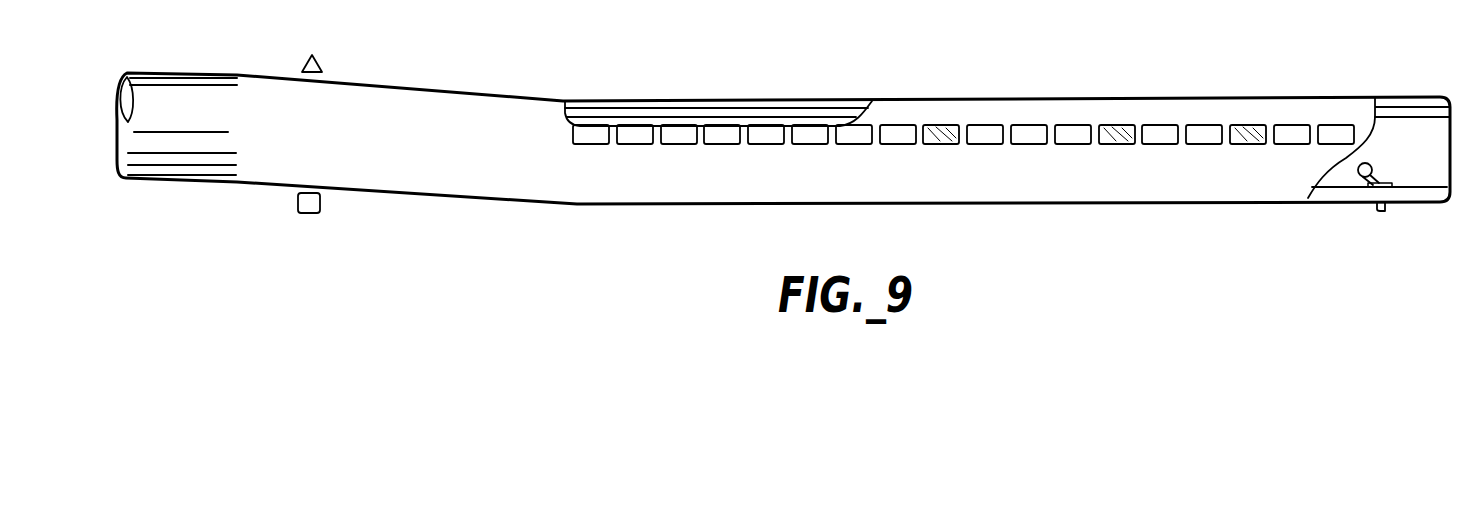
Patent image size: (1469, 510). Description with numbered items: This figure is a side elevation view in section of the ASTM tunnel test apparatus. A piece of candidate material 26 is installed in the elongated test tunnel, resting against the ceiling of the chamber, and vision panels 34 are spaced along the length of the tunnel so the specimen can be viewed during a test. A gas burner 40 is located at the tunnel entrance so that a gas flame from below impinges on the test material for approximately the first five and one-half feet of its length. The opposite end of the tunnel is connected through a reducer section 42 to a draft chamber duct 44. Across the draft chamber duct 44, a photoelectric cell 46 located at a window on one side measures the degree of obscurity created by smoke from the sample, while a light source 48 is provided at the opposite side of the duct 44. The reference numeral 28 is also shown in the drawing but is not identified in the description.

The reducer section 42 is at (452, 107).
The draft chamber duct 44 is at (210, 97).
The light source 48 is at (322, 64).
The photoelectric cell 46 is at (320, 199).
The display window 28 is at (797, 99).
The candidate material 26 is at (652, 125).
The vision panels 34 is at (988, 134).
The gas burner 40 is at (1380, 163).